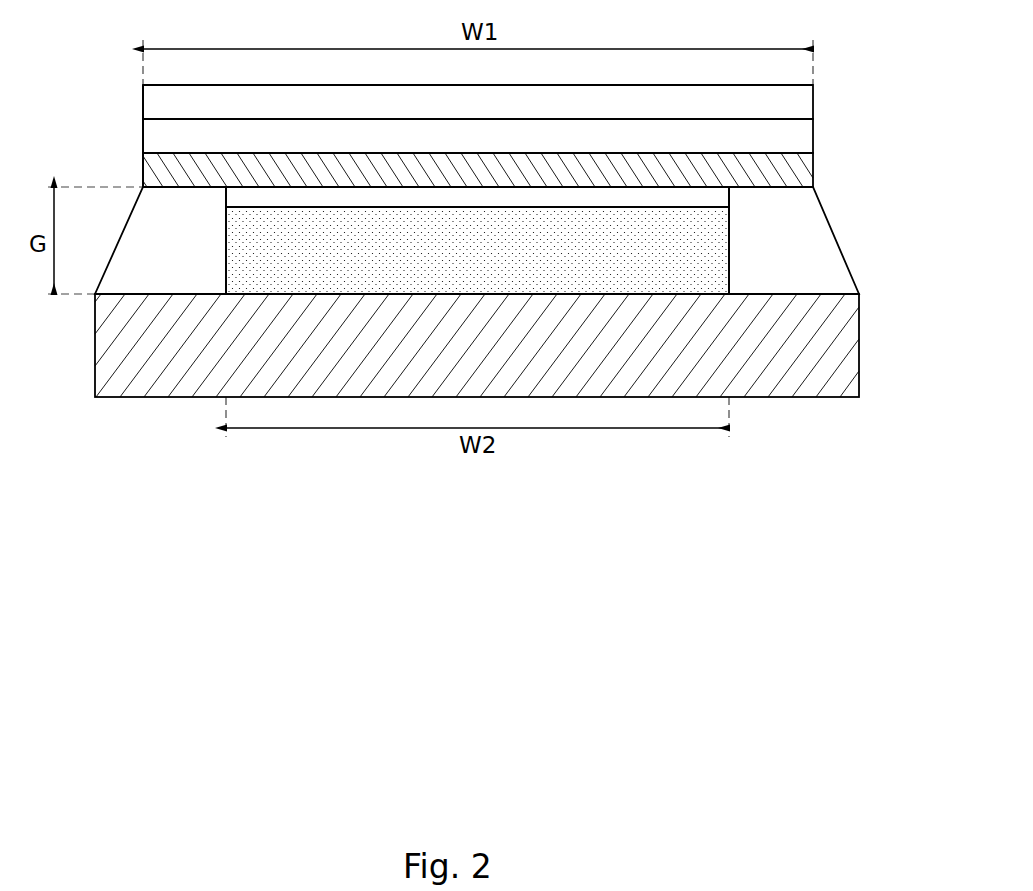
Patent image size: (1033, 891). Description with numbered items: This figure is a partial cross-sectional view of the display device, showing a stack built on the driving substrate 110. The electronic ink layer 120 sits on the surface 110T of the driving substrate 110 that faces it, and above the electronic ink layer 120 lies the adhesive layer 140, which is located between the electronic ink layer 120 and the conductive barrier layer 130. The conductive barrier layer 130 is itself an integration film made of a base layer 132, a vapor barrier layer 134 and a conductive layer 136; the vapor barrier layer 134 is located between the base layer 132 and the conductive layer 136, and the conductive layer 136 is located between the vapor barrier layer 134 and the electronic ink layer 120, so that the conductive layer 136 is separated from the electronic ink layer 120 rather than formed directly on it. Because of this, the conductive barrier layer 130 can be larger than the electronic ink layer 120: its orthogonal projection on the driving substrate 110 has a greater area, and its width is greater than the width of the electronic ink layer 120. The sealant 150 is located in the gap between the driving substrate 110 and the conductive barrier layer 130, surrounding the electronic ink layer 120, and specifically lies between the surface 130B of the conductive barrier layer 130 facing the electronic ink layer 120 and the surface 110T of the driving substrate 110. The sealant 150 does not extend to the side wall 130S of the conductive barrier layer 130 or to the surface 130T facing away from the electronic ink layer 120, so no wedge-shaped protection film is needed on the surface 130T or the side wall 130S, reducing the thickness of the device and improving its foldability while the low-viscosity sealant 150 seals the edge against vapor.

The driving substrate 110 is at (100, 343).
The surface of the driving substrate facing the electronic ink layer 110T is at (805, 291).
The electronic ink layer 120 is at (233, 242).
The conductive barrier layer 130 is at (548, 137).
The surface of the conductive barrier layer facing away from the electronic ink laye 130T is at (785, 85).
The surface of the conductive barrier layer facing the electronic ink layer 130B is at (797, 188).
The side wall of the conductive barrier layer 130S is at (143, 135).
The base layer 132 is at (802, 102).
The vapor barrier layer 134 is at (802, 137).
The conductive layer 136 is at (516, 170).
The adhesive layer 140 is at (722, 197).
The sealant 150 is at (142, 205).